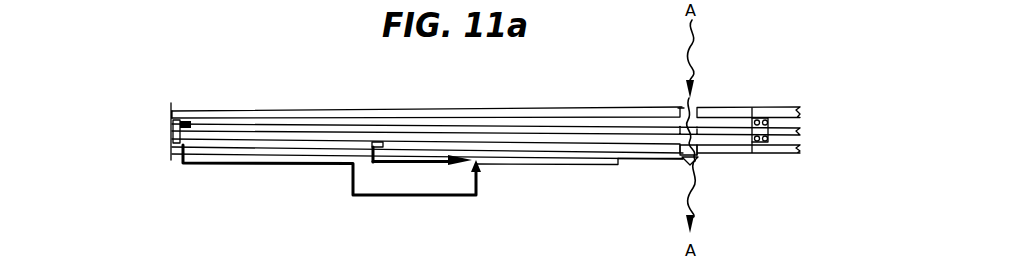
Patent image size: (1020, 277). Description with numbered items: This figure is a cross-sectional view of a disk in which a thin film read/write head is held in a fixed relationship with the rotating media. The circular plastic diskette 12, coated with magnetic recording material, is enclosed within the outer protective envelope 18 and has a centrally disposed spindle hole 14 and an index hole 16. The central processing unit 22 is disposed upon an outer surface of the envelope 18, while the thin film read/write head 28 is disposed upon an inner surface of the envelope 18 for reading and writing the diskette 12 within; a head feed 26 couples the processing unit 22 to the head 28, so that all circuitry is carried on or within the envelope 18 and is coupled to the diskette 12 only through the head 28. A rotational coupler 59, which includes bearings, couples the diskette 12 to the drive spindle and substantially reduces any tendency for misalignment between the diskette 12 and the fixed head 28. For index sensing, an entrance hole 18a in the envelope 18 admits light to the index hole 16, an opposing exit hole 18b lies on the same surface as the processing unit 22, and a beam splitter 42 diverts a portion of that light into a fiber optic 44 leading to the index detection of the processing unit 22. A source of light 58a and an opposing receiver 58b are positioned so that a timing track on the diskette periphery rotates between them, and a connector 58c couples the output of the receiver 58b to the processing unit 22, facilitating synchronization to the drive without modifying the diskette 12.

The diskette 12 is at (230, 132).
The spindle hole 14 is at (770, 128).
The index hole 16 is at (689, 106).
The envelope 18 is at (313, 110).
The entrance hole 18a is at (686, 106).
The exit hole 18b is at (698, 136).
The central processing unit 22 is at (533, 163).
The head feed 26 is at (418, 163).
The thin film read/write head 28 is at (370, 143).
The beam splitter 42 is at (698, 162).
The fiber optic 44 is at (653, 160).
The source of light 58a is at (175, 118).
The receiver 58b is at (182, 152).
The connector 58c is at (272, 170).
The rotational coupler 59 is at (767, 139).